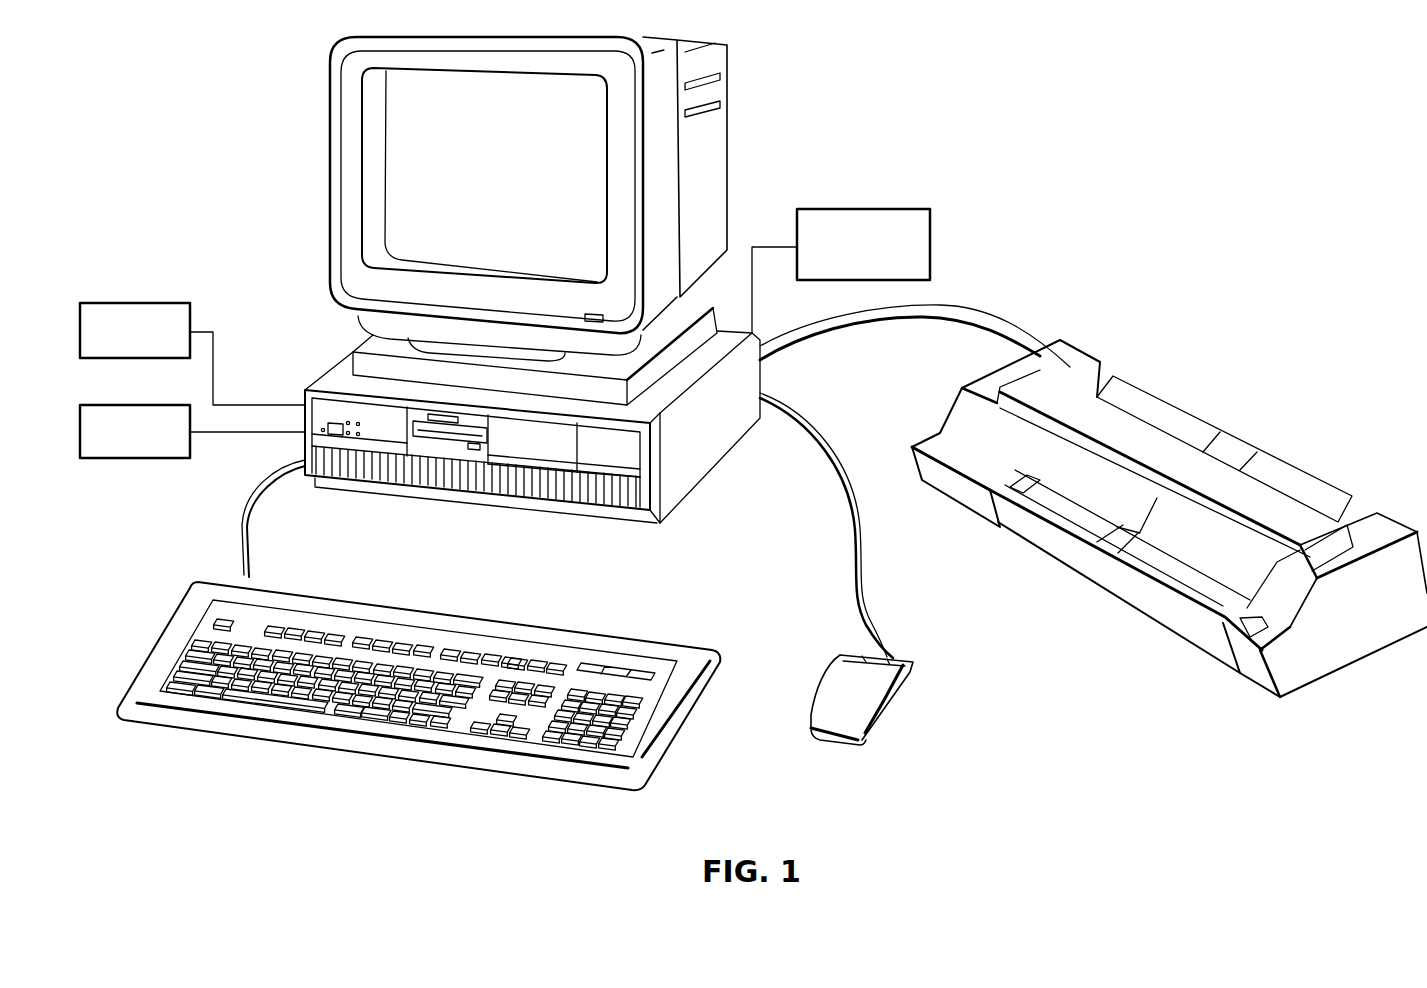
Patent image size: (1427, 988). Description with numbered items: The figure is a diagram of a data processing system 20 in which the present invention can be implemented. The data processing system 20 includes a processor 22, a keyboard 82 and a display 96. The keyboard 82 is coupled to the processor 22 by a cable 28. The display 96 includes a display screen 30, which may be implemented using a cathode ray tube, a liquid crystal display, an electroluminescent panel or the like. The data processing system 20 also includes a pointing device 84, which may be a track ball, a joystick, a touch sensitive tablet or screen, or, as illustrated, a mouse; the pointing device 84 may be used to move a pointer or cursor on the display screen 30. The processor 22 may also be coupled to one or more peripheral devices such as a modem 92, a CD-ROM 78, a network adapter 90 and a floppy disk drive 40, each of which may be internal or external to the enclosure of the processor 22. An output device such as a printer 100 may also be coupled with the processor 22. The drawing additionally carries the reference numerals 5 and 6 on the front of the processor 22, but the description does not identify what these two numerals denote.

The data processing system 20 is at (982, 146).
The processor 22 is at (661, 546).
The system unit drive bay 5 is at (585, 467).
The hard disk drive 6 is at (575, 497).
The cable 28 is at (246, 507).
The display screen 30 is at (455, 205).
The floppy disk drive 40 is at (447, 437).
The CD-ROM 78 is at (148, 460).
The keyboard 82 is at (358, 758).
The pointing device 84 is at (899, 690).
The network adapter 90 is at (855, 208).
The modem 92 is at (139, 303).
The display 96 is at (320, 173).
The printer 100 is at (1093, 342).